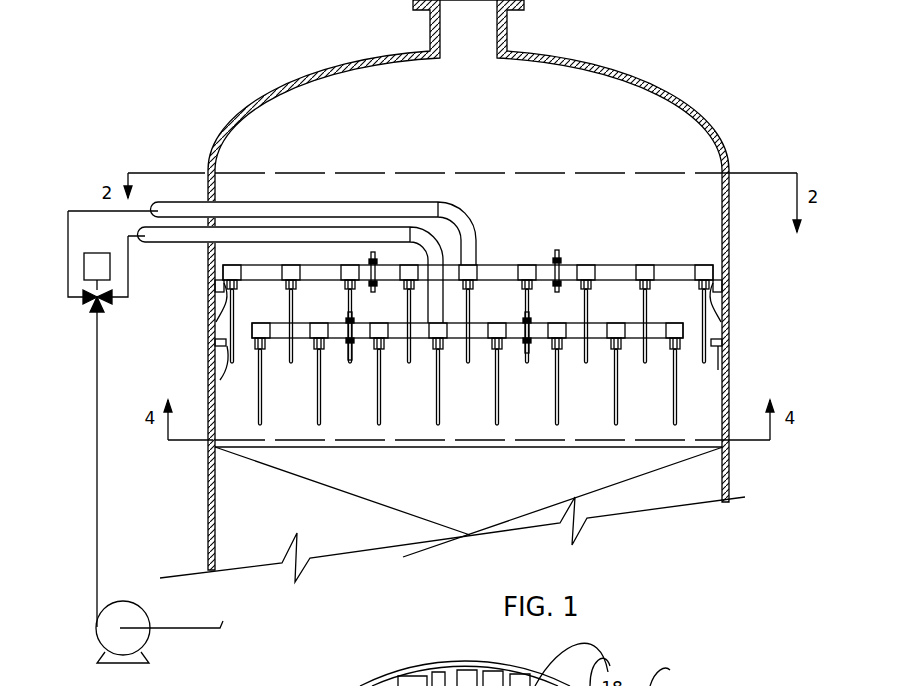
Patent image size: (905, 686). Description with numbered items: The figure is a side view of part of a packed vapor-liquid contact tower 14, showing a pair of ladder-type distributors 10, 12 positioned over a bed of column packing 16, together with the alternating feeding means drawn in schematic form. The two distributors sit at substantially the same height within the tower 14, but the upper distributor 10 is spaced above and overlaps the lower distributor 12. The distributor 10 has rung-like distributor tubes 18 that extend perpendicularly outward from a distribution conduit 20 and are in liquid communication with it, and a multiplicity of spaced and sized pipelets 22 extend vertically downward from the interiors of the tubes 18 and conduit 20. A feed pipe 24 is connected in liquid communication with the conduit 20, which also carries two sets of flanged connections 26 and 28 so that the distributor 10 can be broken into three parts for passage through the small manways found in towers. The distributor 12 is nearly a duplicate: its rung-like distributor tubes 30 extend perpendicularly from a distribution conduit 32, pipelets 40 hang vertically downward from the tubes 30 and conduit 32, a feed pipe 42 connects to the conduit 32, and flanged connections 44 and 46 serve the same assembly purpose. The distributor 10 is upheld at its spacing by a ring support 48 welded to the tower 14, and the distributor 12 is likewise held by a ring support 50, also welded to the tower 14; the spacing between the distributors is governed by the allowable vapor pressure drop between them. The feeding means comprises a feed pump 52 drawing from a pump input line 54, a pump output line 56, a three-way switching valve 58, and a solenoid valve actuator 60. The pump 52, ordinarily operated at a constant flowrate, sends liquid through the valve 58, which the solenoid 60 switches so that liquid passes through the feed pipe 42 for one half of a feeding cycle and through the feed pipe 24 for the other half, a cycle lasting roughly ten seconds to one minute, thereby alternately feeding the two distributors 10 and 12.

The distributor 10 is at (682, 216).
The distributor 12 is at (684, 321).
The packed tower 14 is at (729, 214).
The bed of column packing 16 is at (476, 515).
The distributor tubes 18 is at (533, 224).
The distribution conduit 20 is at (622, 277).
The pipelets 22 is at (470, 352).
The feed pipe 24 is at (474, 202).
The flanged connection 26 is at (548, 203).
The flanged connection 28 is at (379, 283).
The distributor tubes 30 is at (563, 342).
The distribution conduit 32 is at (621, 352).
The pipelets 40 is at (438, 360).
The feed pipe 42 is at (303, 241).
The flanged connection 44 is at (350, 362).
The flanged connection 46 is at (529, 356).
The ring support 48 is at (213, 318).
The ring support 50 is at (214, 375).
The feed pump 52 is at (148, 596).
The pump input line 54 is at (207, 596).
The pump output line 56 is at (96, 427).
The three-way switching valve 58 is at (100, 317).
The valve actuator 60 is at (110, 260).